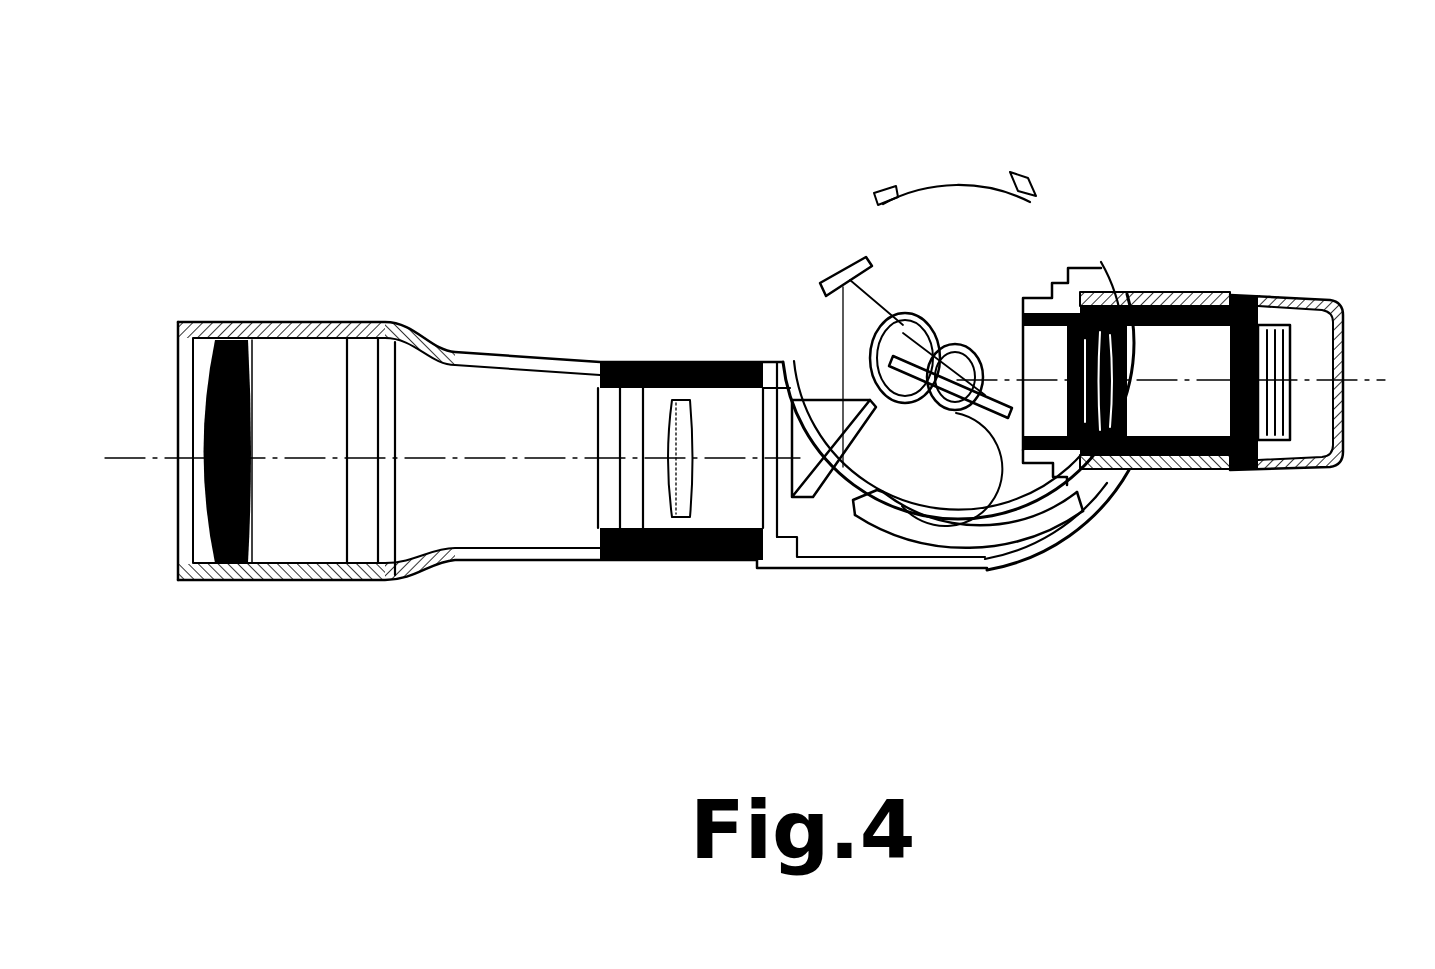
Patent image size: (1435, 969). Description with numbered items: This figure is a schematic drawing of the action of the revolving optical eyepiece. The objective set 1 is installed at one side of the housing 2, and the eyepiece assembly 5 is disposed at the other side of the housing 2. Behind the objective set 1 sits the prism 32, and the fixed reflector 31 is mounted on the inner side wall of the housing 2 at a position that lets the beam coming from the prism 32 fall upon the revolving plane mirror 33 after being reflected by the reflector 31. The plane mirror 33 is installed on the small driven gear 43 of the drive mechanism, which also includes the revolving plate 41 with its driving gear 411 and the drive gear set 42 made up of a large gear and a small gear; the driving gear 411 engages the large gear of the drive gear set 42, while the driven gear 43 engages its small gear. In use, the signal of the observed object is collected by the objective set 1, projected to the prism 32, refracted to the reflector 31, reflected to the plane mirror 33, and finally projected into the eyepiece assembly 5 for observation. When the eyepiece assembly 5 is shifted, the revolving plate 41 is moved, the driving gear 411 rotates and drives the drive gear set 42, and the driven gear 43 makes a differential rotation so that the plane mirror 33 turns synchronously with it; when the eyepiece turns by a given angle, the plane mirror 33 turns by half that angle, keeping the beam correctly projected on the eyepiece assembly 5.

The objective set 1 is at (398, 330).
The housing 2 is at (1117, 260).
The eyepiece assembly 5 is at (1297, 460).
The fixed reflector 31 is at (820, 270).
The prism 32 is at (817, 493).
The revolving plane mirror 33 is at (985, 415).
The revolving plate 41 is at (1020, 490).
The driving gear 411 is at (957, 353).
The drive gear set 42 is at (905, 330).
The small driven gear 43 is at (975, 348).